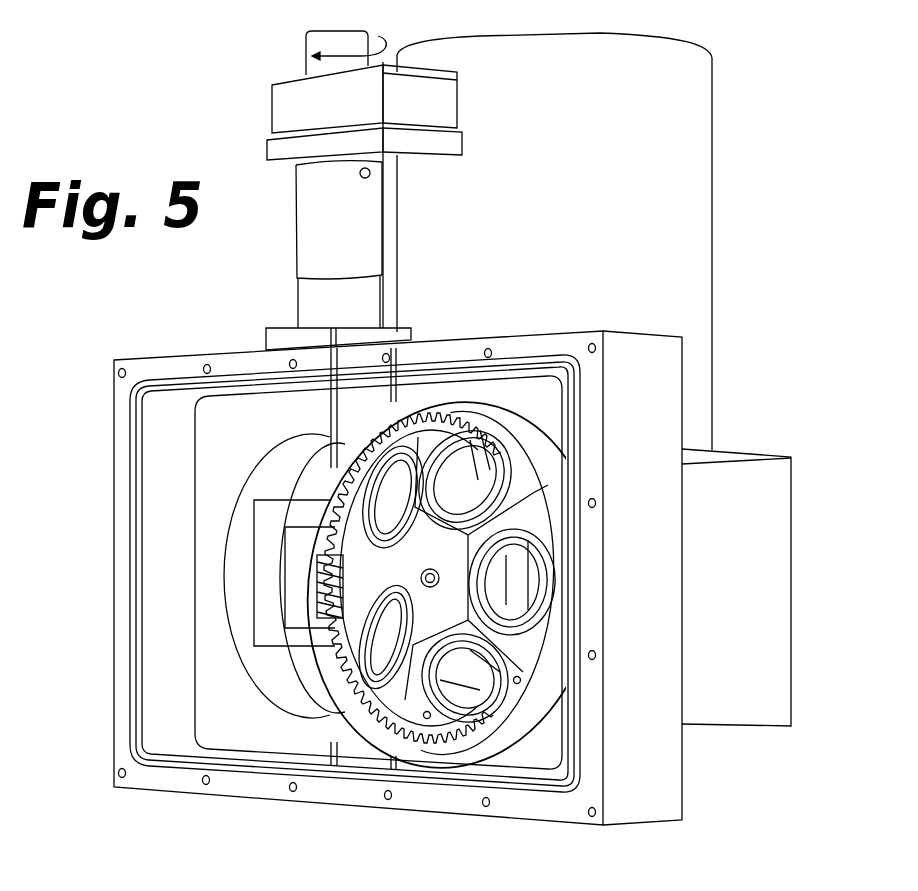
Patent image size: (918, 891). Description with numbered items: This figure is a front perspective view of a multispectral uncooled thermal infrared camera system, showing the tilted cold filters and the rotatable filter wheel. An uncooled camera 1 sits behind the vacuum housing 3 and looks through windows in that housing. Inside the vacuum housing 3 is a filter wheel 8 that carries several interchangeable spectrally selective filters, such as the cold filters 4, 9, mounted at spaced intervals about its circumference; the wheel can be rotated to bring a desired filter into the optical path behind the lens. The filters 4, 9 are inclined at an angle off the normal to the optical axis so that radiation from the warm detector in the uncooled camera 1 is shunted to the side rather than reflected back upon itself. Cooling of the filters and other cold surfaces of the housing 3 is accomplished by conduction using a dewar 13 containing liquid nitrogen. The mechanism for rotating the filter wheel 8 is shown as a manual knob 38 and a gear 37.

The uncooled camera 1 is at (724, 455).
The vacuum housing 3 is at (648, 331).
The cold filter 4 is at (520, 572).
The filter wheel 8 is at (417, 608).
The cold filter 9 is at (358, 522).
The dewar 13 is at (697, 166).
The gear 37 is at (320, 578).
The manual knob 38 is at (332, 38).